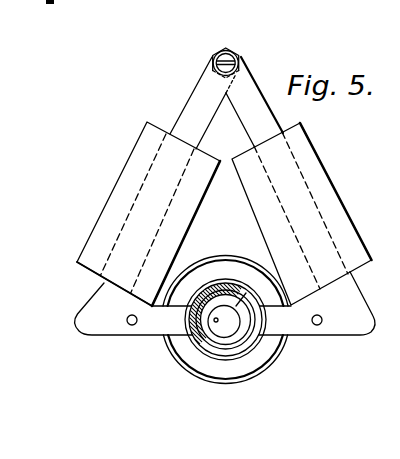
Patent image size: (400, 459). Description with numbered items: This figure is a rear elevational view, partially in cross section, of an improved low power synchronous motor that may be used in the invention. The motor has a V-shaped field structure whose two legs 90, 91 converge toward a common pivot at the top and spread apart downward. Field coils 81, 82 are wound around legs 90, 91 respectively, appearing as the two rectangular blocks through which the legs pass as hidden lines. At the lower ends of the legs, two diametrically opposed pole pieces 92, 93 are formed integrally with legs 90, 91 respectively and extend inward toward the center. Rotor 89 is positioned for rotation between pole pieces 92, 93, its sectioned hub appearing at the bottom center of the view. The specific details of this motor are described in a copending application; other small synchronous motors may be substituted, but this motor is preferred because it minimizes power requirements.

The field coil 81 is at (338, 204).
The field coil 82 is at (125, 172).
The rotor 89 is at (214, 321).
The leg 90 is at (199, 81).
The leg 91 is at (252, 77).
The pole piece 92 is at (155, 327).
The pole piece 93 is at (291, 328).